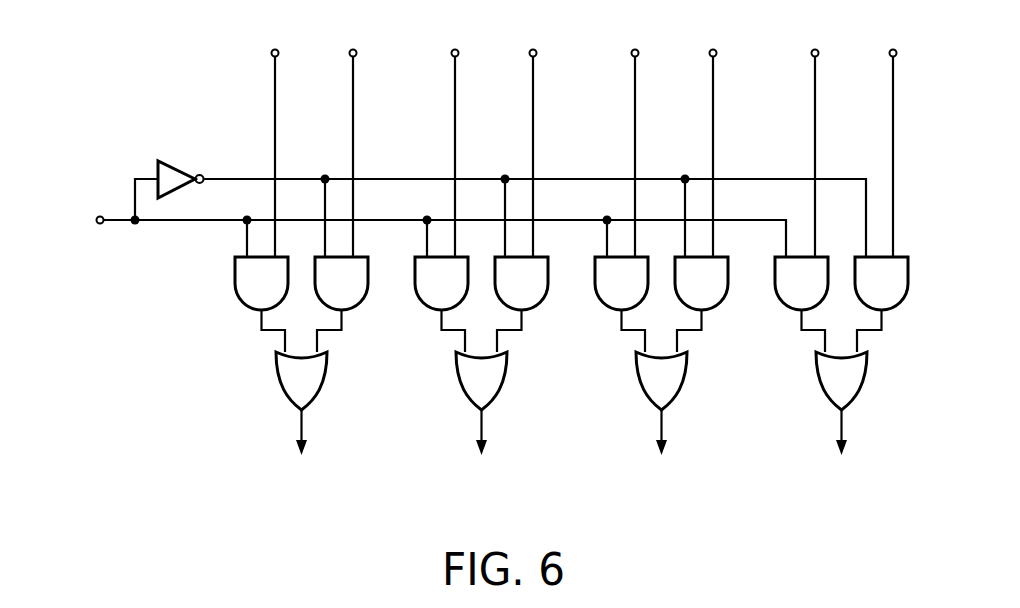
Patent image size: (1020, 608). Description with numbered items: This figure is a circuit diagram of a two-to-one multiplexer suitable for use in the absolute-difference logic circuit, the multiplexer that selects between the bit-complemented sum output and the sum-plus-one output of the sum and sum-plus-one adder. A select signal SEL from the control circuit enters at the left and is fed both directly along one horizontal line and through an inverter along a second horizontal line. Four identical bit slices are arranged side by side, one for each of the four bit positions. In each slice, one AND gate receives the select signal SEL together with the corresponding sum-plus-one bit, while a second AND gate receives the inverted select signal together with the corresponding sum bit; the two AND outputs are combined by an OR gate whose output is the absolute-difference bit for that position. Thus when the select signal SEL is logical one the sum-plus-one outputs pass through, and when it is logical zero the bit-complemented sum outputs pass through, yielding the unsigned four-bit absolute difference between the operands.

The select signal SEL is at (456, 209).